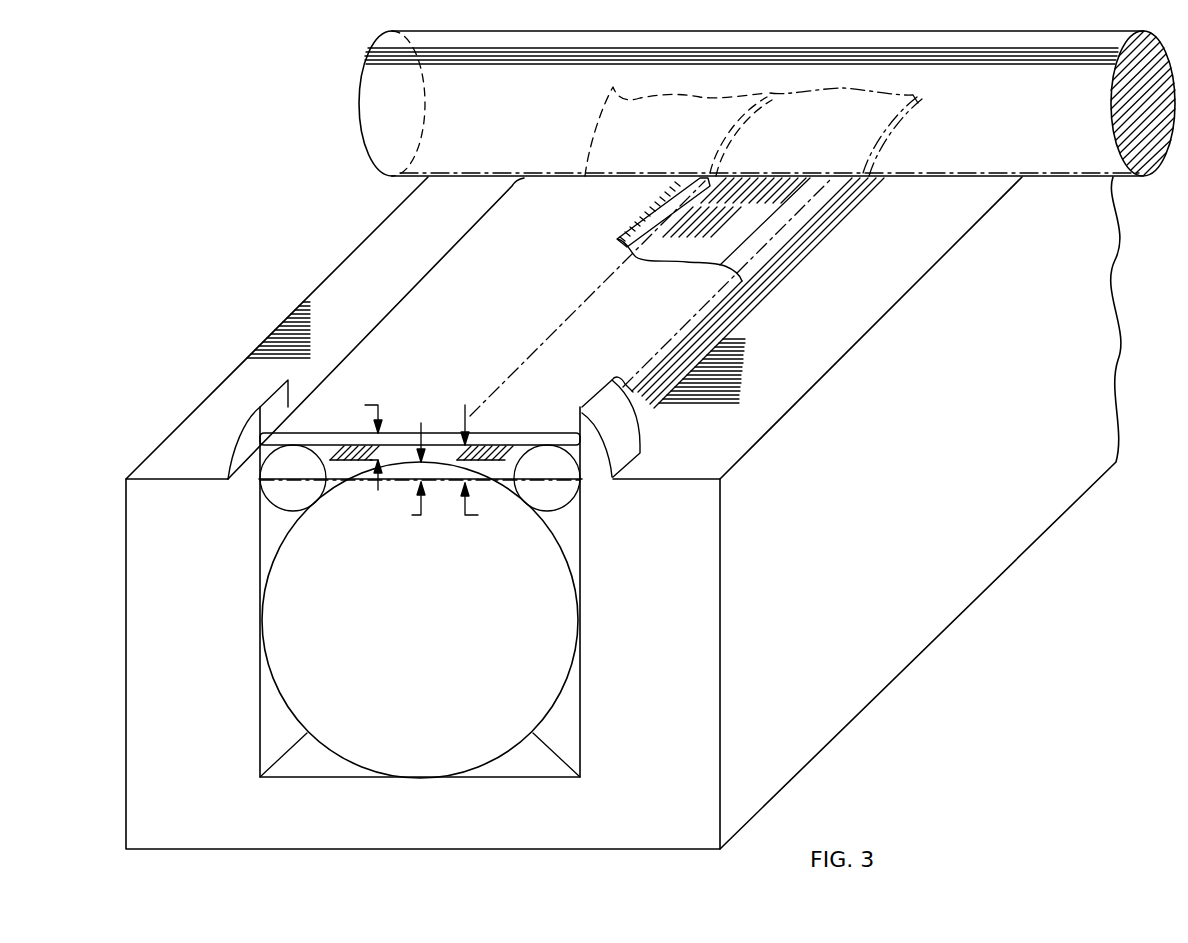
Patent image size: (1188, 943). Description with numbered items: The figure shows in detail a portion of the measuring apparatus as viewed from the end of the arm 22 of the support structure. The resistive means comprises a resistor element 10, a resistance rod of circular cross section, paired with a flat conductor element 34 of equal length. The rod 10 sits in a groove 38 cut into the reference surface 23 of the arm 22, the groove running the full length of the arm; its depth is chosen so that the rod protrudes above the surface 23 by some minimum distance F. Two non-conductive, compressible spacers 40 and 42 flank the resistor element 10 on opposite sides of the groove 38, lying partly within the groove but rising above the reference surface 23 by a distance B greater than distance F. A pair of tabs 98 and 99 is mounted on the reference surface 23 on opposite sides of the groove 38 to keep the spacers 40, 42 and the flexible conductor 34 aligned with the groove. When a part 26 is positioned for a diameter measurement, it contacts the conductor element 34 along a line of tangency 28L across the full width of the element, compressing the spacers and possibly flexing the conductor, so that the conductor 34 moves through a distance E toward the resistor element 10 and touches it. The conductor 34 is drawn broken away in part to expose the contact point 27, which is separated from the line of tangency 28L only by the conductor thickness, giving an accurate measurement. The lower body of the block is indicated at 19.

The resistor element 10 is at (545, 618).
The base 19 is at (175, 738).
The arm 22 is at (127, 618).
The reference surface 23 is at (185, 440).
The part 26 is at (395, 135).
The contact point 27 is at (703, 181).
The line of tangency 28L is at (703, 170).
The conductor element 34 is at (470, 258).
The groove 38 is at (325, 778).
The spacer 40 is at (290, 490).
The spacer 42 is at (558, 490).
The tab 98 is at (258, 406).
The tab 99 is at (617, 432).
The distance E is at (365, 442).
The distance F is at (411, 476).
The distance B is at (478, 467).